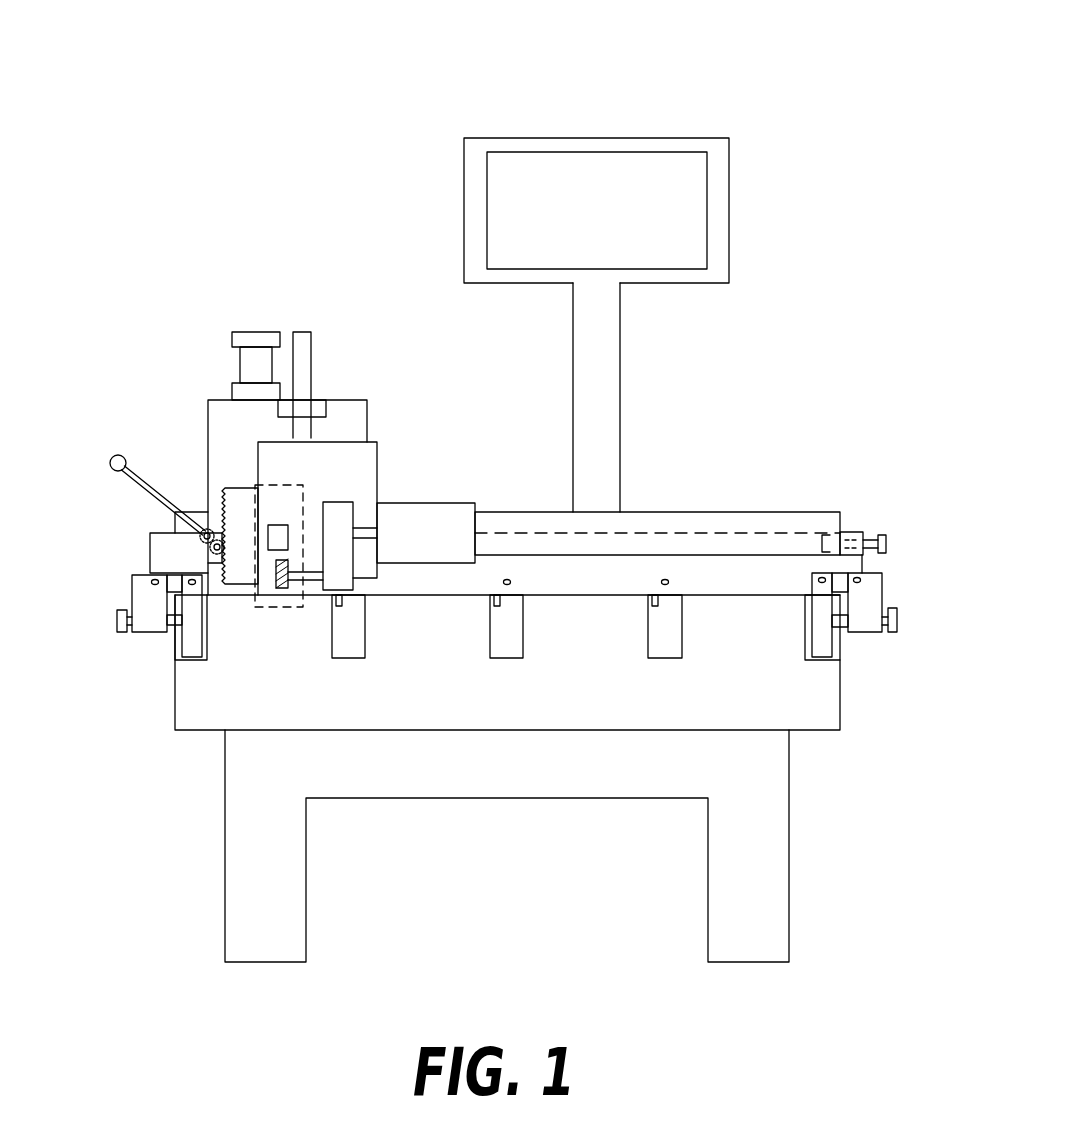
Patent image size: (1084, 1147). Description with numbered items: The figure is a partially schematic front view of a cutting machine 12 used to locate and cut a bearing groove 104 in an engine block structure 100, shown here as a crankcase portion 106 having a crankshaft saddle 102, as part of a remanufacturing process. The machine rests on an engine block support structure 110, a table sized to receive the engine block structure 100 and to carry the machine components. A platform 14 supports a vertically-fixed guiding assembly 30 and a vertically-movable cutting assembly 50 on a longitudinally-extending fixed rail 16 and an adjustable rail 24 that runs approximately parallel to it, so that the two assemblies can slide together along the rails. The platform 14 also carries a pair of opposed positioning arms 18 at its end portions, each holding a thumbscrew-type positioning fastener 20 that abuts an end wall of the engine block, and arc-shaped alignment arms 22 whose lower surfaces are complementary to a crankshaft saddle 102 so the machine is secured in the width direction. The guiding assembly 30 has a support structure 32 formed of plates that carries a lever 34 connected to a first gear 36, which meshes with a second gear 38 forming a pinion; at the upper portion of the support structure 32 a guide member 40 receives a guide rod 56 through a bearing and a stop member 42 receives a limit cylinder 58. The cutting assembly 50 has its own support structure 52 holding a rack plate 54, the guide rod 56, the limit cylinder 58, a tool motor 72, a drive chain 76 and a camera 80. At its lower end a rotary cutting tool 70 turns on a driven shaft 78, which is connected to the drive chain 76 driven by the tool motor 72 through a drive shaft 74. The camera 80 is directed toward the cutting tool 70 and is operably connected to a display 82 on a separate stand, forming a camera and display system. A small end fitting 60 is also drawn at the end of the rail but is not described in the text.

The cutting machine 12 is at (293, 80).
The platform 14 is at (862, 560).
The fixed rail 16 is at (795, 518).
The positioning arms 18 is at (146, 632).
The positioning fasteners 20 is at (117, 621).
The alignment arms 22 is at (186, 652).
The adjustable rail 24 is at (712, 532).
The guiding assembly 30 is at (158, 355).
The support structure 32 is at (212, 460).
The lever 34 is at (112, 458).
The first gear 36 is at (200, 537).
The second gear 38 is at (211, 549).
The guide member 40 is at (320, 410).
The stop member 42 is at (235, 390).
The cutting assembly 50 is at (413, 472).
The support structure 52 is at (378, 446).
The rack plate 54 is at (246, 500).
The guide rod 56 is at (305, 378).
The limit cylinder 58 is at (240, 358).
The end screw 60 is at (886, 540).
The cutting tool 70 is at (299, 556).
The tool motor 72 is at (470, 505).
The drive shaft 74 is at (368, 528).
The drive chain 76 is at (345, 568).
The driven shaft 78 is at (300, 584).
The camera 80 is at (274, 525).
The display 82 is at (740, 216).
The engine block structure 100 is at (203, 752).
The crankshaft saddle 102 is at (358, 638).
The bearing groove 104 is at (345, 603).
The crankcase portion 106 is at (493, 698).
The engine block support structure 110 is at (225, 865).